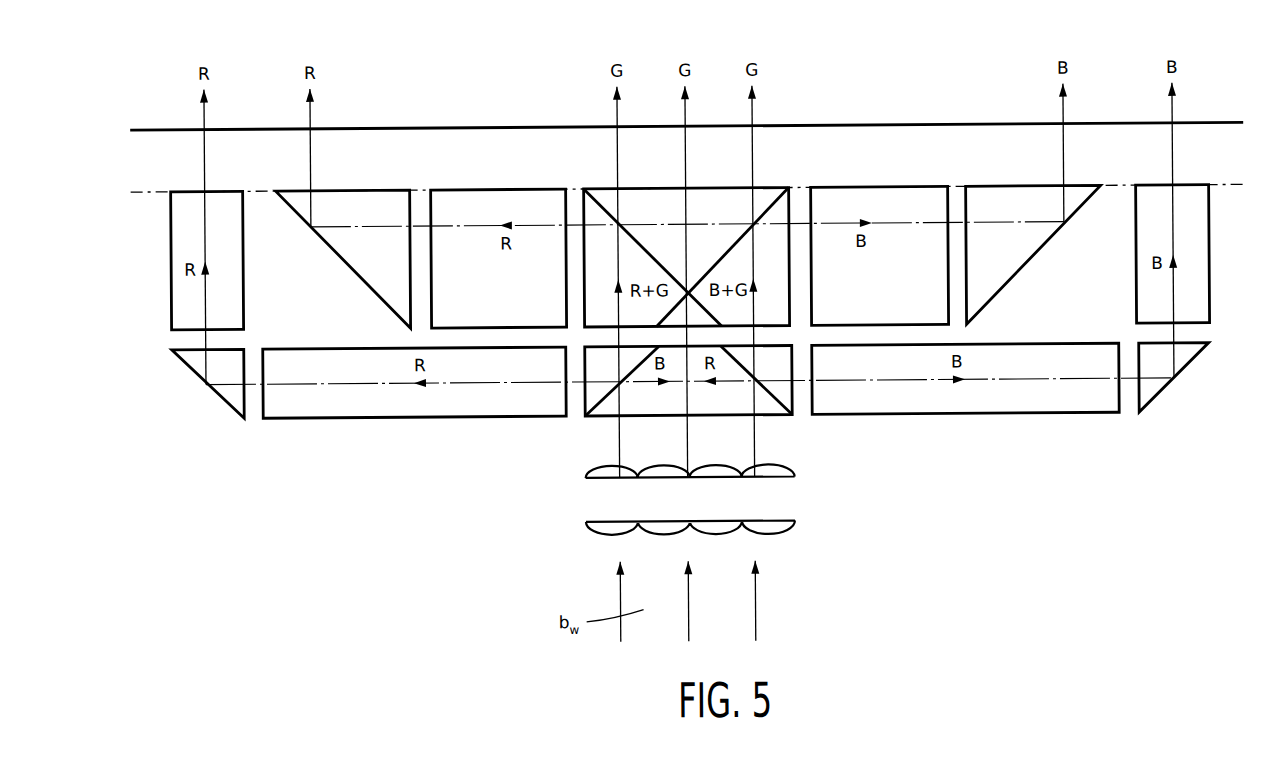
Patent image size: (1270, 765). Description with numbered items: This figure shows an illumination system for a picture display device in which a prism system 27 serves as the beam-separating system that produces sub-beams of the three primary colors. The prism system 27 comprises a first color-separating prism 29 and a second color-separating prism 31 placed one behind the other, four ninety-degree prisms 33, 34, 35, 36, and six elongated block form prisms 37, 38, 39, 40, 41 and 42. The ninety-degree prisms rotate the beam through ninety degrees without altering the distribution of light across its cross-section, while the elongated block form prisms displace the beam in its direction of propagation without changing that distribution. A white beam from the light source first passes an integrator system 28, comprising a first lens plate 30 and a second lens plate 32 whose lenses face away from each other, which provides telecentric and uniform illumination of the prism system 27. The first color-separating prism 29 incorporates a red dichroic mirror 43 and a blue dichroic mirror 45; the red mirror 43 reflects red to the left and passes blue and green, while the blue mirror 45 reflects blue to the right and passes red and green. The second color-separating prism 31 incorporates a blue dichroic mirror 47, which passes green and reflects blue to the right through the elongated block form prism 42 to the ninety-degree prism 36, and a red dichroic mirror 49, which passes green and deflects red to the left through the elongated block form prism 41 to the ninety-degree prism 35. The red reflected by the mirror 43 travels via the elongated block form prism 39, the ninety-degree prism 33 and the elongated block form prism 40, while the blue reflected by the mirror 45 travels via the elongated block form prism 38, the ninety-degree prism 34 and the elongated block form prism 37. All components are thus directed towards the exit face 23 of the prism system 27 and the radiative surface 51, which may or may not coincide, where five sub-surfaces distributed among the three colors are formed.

The exit face 23 is at (1110, 192).
The prism system 27 is at (286, 552).
The integrator system 28 is at (705, 500).
The first color-separating prism 29 is at (689, 400).
The first lens plate 30 is at (583, 481).
The second color-separating prism 31 is at (685, 234).
The second lens plate 32 is at (583, 525).
The 90° prism 33 is at (229, 401).
The 90° prism 34 is at (1150, 399).
The 90° prism 35 is at (380, 205).
The 90° prism 36 is at (1021, 204).
The elongated block form prism 37 is at (1195, 240).
The elongated block form prism 38 is at (1081, 398).
The elongated block form prism 39 is at (410, 398).
The elongated block form prism 40 is at (223, 206).
The elongated block form prism 41 is at (460, 206).
The elongated block form prism 42 is at (835, 205).
The red dichroic mirror 43 is at (766, 395).
The blue dichroic mirror 45 is at (602, 395).
The blue dichroic mirror 47 is at (736, 244).
The red dichroic mirror 49 is at (598, 201).
The radiative surface 51 is at (1213, 130).